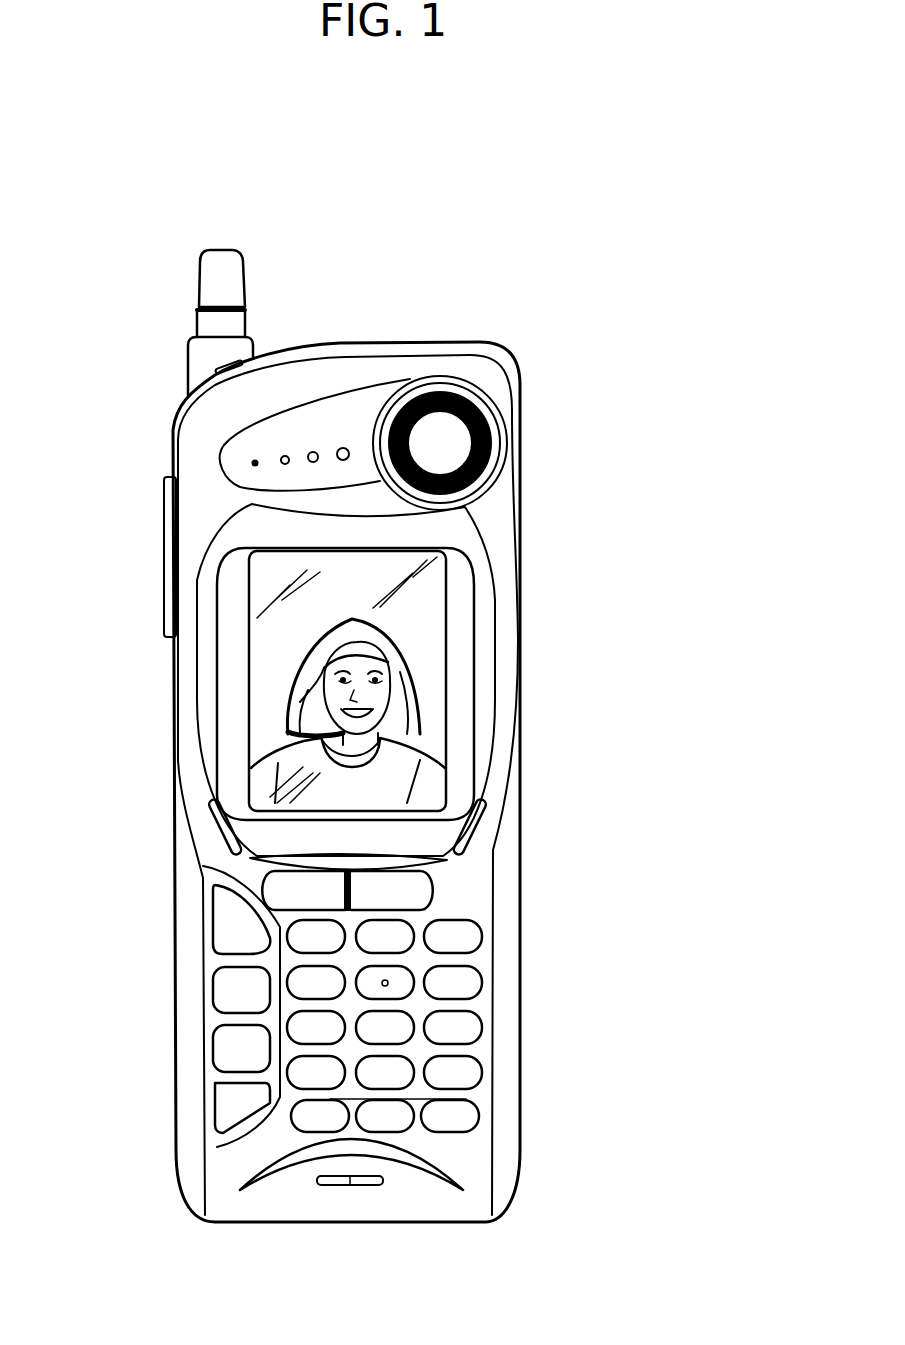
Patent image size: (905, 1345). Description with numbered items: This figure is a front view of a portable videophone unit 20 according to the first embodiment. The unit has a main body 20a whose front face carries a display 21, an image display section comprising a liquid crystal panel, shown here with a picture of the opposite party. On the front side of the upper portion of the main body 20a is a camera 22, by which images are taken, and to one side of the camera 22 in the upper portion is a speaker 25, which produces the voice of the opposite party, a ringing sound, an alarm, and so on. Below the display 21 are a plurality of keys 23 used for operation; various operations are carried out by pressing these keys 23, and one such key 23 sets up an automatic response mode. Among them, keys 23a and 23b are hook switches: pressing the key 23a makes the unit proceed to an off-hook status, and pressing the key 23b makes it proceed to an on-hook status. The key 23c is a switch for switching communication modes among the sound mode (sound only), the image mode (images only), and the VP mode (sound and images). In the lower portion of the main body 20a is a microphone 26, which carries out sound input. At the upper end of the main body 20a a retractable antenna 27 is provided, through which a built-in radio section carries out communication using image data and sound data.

The portable videophone unit 20 is at (533, 300).
The unit main body 20a is at (520, 716).
The display 21 is at (430, 663).
The camera 22 is at (450, 442).
The keys 23 is at (460, 943).
The key 23a is at (280, 883).
The key 23b is at (430, 885).
The key 23c is at (223, 902).
The speaker 25 is at (313, 452).
The microphone 26 is at (347, 1190).
The retractable antenna 27 is at (219, 268).